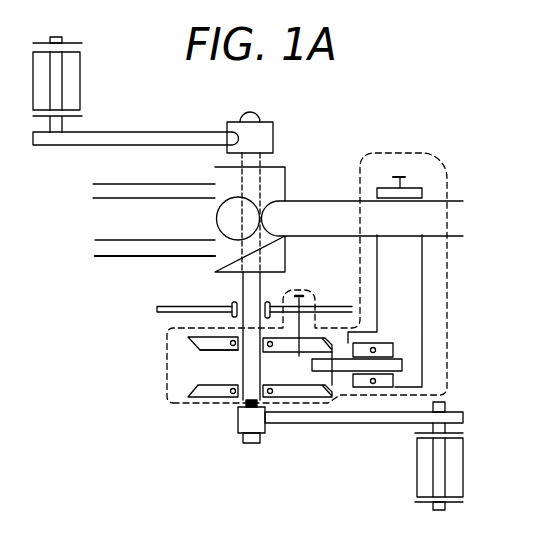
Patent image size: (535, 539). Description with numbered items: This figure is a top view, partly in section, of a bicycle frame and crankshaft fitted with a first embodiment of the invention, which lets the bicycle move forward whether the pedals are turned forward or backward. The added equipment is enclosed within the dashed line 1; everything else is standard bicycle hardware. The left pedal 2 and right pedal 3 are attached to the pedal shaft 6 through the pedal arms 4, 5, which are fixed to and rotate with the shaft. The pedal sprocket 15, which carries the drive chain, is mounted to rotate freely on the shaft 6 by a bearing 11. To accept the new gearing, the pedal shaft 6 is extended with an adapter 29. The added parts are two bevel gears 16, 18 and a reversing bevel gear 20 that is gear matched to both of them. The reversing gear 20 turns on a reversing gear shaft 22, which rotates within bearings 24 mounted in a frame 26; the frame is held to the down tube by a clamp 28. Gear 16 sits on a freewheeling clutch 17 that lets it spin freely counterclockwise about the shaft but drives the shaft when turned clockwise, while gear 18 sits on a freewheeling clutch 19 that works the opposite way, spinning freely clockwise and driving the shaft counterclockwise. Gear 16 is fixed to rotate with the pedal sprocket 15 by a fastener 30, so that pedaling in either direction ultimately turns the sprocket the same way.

The dashed line 1 is at (428, 152).
The left pedal 2 is at (82, 62).
The right pedal 3 is at (467, 460).
The pedal arm 4 is at (150, 132).
The pedal arm 5 is at (381, 424).
The pedal shaft 6 is at (263, 162).
The bearing 11 is at (232, 304).
The pedal sprocket 15 is at (157, 313).
The bevel gear 16 is at (195, 345).
The freewheeling clutch 17 is at (230, 353).
The bevel gear 18 is at (185, 390).
The freewheeling clutch 19 is at (240, 410).
The reversing bevel gear 20 is at (340, 400).
The reversing gear shaft 22 is at (341, 373).
The bearings 24 is at (395, 348).
The frame 26 is at (415, 268).
The clamp 28 is at (420, 178).
The adapter 29 is at (243, 282).
The fastener 30 is at (300, 296).